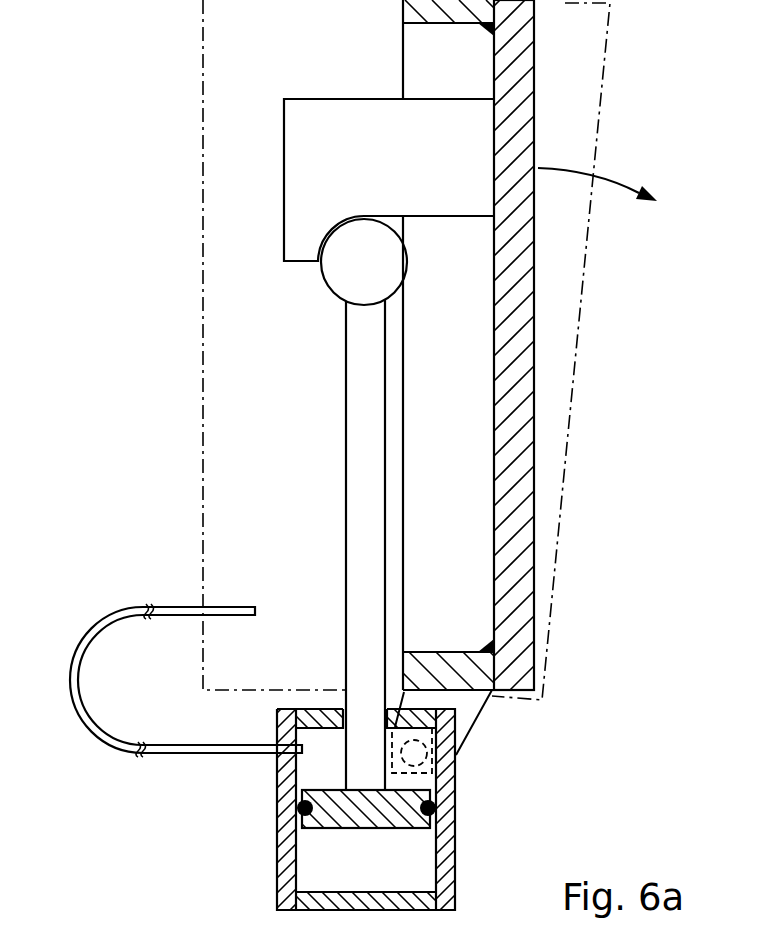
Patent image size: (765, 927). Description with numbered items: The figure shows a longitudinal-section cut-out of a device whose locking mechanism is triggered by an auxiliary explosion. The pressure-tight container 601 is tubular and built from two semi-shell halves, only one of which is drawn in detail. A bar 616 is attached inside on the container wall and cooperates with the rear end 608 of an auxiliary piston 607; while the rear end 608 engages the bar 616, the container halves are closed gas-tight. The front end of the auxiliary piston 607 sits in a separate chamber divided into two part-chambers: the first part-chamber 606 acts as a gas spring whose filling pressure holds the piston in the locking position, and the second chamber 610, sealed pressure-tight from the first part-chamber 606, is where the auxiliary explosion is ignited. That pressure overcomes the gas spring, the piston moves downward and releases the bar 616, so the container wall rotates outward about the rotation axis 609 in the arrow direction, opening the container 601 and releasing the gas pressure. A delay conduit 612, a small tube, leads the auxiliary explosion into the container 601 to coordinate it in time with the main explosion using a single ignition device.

The pressure-tight container 601 is at (510, 339).
The first part-chamber 606 is at (403, 852).
The auxiliary piston 607 is at (335, 815).
The rear end of the auxiliary piston 608 is at (343, 281).
The rotation axis 609 is at (420, 754).
The second chamber 610 is at (316, 773).
The delay conduit 612 is at (108, 613).
The bar 616 is at (348, 122).